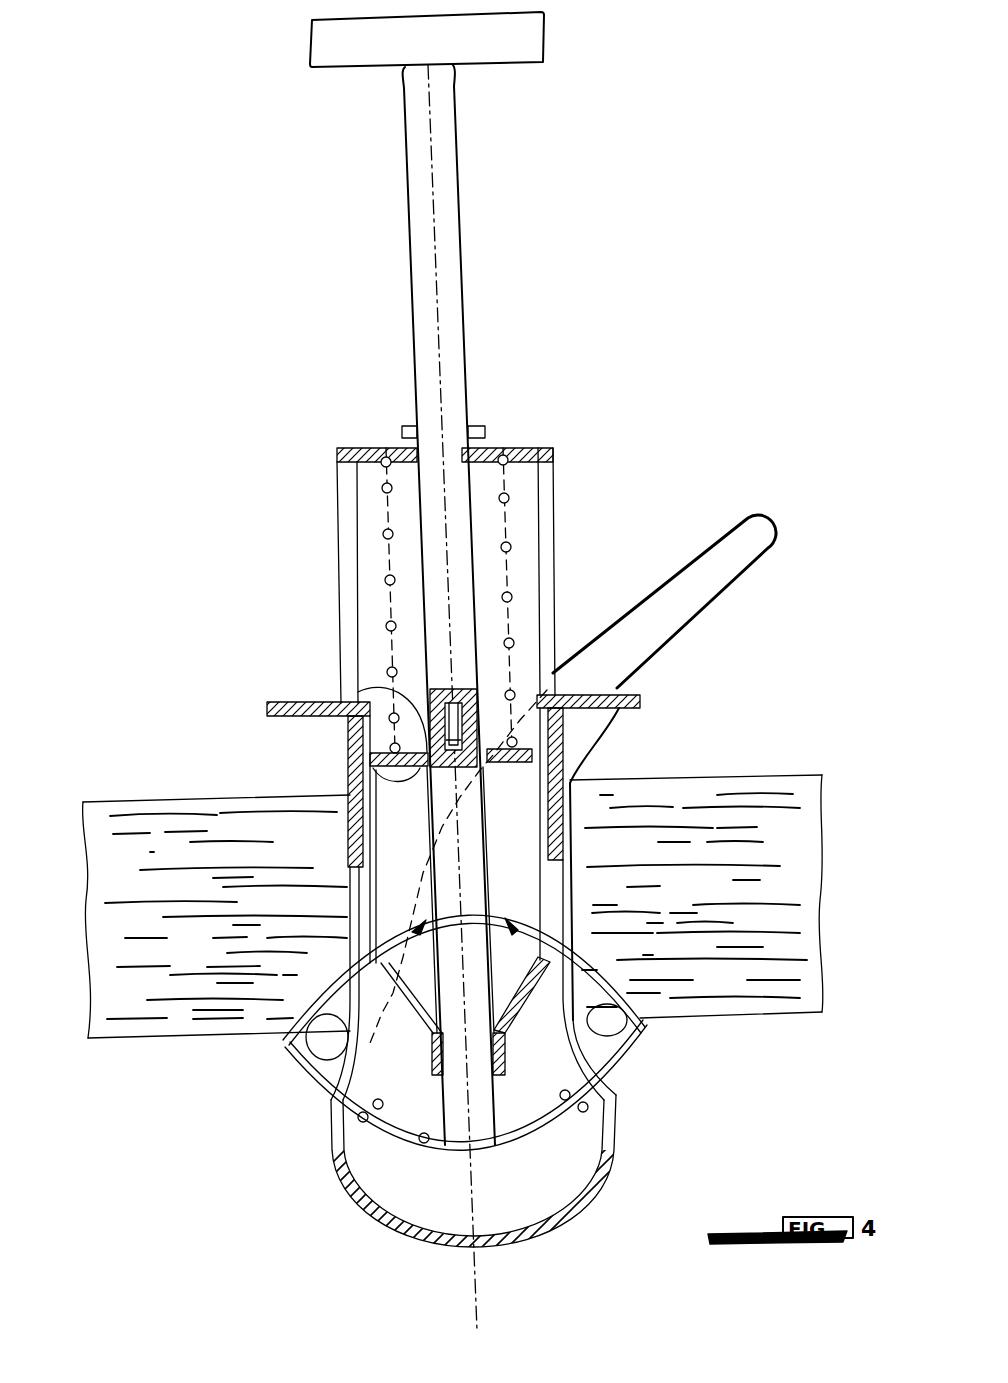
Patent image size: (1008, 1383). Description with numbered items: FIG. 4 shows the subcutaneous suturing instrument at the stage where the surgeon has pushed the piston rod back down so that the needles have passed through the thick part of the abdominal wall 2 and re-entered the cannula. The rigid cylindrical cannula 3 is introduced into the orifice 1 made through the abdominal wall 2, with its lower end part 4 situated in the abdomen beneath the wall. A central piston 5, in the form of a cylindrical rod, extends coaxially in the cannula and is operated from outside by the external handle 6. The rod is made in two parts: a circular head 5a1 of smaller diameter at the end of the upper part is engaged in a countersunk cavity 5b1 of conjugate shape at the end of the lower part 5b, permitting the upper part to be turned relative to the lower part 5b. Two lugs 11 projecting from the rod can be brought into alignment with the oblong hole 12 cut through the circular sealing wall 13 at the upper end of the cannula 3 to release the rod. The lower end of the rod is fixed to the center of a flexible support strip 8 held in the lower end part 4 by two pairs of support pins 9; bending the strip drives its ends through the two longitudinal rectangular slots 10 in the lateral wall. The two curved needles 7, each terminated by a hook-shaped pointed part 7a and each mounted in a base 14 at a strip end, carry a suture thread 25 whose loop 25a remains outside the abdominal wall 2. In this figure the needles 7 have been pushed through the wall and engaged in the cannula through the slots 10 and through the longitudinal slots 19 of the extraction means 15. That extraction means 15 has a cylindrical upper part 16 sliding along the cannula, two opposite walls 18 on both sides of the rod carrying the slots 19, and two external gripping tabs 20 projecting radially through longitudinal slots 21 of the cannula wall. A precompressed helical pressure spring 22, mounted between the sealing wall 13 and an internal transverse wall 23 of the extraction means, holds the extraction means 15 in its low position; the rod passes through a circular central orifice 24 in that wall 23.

The orifice 1 is at (345, 790).
The abdominal wall 2 is at (453, 906).
The cannula 3 is at (298, 462).
The lower end part 4 is at (340, 1196).
The central piston 5 is at (460, 291).
The circular head 5a1 is at (545, 660).
The lower part of rod 5b is at (468, 870).
The countersunk cavity 5b1 is at (440, 745).
The external handle 6 is at (457, 43).
The needles 7 is at (322, 985).
The hook-shaped pointed part 7a is at (420, 930).
The support member 8 is at (423, 1144).
The support pins 9 is at (365, 1123).
The longitudinal rectangular slots 10 is at (332, 1138).
The lugs 11 is at (408, 426).
The oblong hole 12 is at (532, 456).
The circular sealing wall 13 is at (342, 456).
The base 14 is at (292, 1042).
The extraction means 15 is at (350, 848).
The cylindrical upper part 16 is at (522, 764).
The walls 18 is at (530, 1008).
The longitudinal slot 19 is at (383, 905).
The external gripping tabs 20 is at (300, 705).
The longitudinal slots 21 is at (340, 590).
The helical pressure spring 22 is at (380, 530).
The internal transverse wall 23 is at (368, 760).
The circular central orifice 24 is at (365, 688).
The suture thread 25 is at (438, 813).
The loop 25a is at (738, 522).